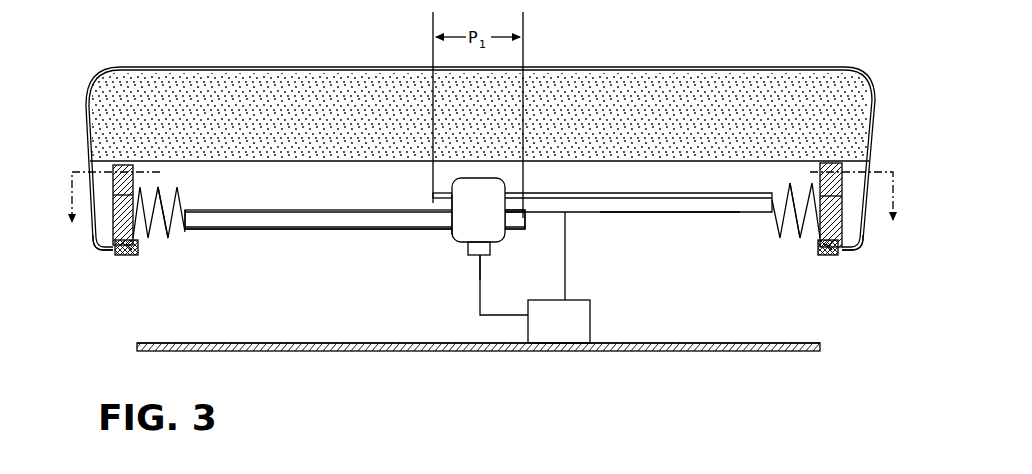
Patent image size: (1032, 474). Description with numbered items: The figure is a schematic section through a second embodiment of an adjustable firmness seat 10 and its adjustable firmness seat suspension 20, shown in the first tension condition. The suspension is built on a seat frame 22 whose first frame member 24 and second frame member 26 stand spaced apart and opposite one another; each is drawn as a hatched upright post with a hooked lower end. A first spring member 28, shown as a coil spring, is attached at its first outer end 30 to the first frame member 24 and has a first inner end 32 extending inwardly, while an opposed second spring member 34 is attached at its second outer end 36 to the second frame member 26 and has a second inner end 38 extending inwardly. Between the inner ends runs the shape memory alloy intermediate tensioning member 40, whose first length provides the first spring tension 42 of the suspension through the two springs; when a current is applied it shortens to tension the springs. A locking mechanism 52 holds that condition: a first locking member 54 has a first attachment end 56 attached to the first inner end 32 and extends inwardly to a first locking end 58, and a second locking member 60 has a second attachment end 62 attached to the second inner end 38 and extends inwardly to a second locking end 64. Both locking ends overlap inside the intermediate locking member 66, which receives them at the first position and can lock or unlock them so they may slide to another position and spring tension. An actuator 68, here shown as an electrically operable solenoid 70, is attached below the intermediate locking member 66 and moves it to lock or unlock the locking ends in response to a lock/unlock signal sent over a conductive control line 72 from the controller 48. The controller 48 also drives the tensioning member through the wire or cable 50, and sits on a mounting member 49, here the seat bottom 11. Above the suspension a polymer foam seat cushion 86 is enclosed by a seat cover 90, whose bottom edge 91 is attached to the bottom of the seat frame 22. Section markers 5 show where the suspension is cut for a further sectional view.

The adjustable firmness seat 10 is at (691, 50).
The seat cover 90 is at (870, 73).
The seat cushion 86 is at (843, 114).
The adjustable firmness seat suspension 20 is at (107, 179).
The first outer end 30 is at (130, 197).
The second outer end 36 is at (823, 198).
The first frame member 24 is at (113, 230).
The second frame member 26 is at (845, 226).
The seat frame 22 is at (124, 256).
The bottom edge 91 is at (130, 249).
The first inner end 32 is at (182, 212).
The first spring member 28 is at (165, 248).
The second inner end 38 is at (776, 215).
The second spring member 34 is at (800, 245).
The intermediate tensioning member 40 is at (368, 214).
The first locking member 54 is at (305, 232).
The first attachment end 56 is at (190, 232).
The first spring tension 42 is at (322, 187).
The first locking end 58 is at (520, 230).
The second attachment end 62 is at (773, 196).
The second locking member 60 is at (666, 201).
The second locking end 64 is at (444, 192).
The locking mechanism 52 is at (511, 218).
The intermediate locking member 66 is at (449, 242).
The actuator 68 is at (473, 258).
The solenoid 70 is at (484, 253).
The conductive control line 72 is at (480, 310).
The wire or cable 50 is at (566, 258).
The controller 48 is at (592, 328).
The seat bottom 11 is at (321, 340).
The mounting member 49 is at (222, 342).
The section line 5 is at (483, 213).